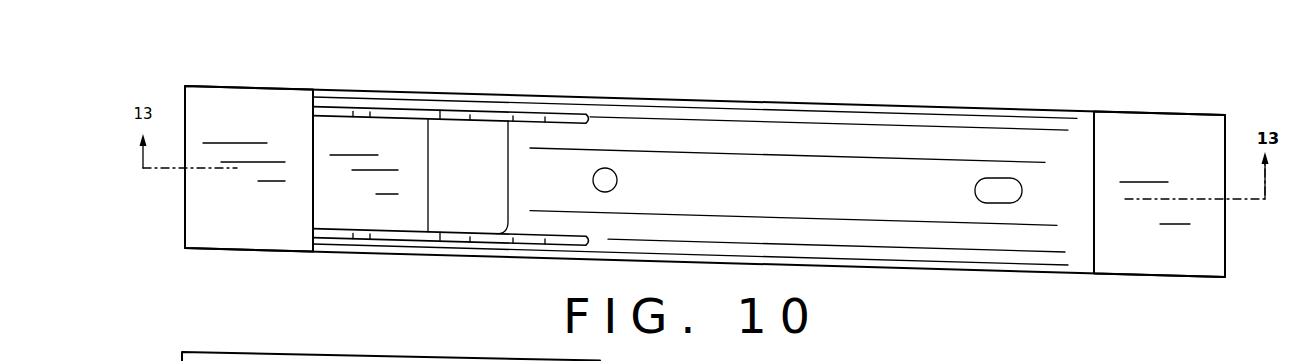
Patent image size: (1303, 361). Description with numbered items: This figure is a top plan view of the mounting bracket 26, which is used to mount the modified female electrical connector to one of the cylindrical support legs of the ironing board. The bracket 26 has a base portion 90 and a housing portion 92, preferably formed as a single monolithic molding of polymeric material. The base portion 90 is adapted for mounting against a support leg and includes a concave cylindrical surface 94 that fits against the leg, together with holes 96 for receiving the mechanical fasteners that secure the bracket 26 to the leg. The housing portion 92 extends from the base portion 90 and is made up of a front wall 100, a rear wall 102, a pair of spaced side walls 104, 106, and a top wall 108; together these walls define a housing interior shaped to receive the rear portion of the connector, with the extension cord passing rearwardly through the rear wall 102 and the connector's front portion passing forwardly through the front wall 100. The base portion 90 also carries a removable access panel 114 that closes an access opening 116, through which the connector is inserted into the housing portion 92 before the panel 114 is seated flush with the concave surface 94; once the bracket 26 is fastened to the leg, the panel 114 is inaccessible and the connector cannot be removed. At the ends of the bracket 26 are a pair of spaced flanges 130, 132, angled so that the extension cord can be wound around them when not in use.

In FIG. 10, the mounting bracket 26 is at (1125, 74).
In FIG. 11, the mounting bracket 26 is at (1198, 350).
In FIG. 10, the base portion 90 is at (837, 102).
In FIG. 11, the base portion 90 is at (910, 360).
In FIG. 10, the housing portion 92 is at (404, 128).
In FIG. 11, the concave cylindrical surface 94 is at (1082, 360).
In FIG. 10, the holes 96 is at (608, 168).
In FIG. 11, the holes 96 is at (567, 360).
In FIG. 10, the front wall 100 is at (428, 150).
In FIG. 11, the rear wall 102 is at (287, 355).
In FIG. 10, the side wall 104 is at (343, 239).
In FIG. 10, the side wall 106 is at (344, 107).
In FIG. 10, the top wall 108 is at (337, 135).
In FIG. 10, the removable access panel 114 is at (497, 150).
In FIG. 11, the removable access panel 114 is at (434, 358).
In FIG. 11, the access opening 116 is at (370, 357).
In FIG. 10, the flange 130 is at (247, 98).
In FIG. 10, the flange 132 is at (1203, 130).